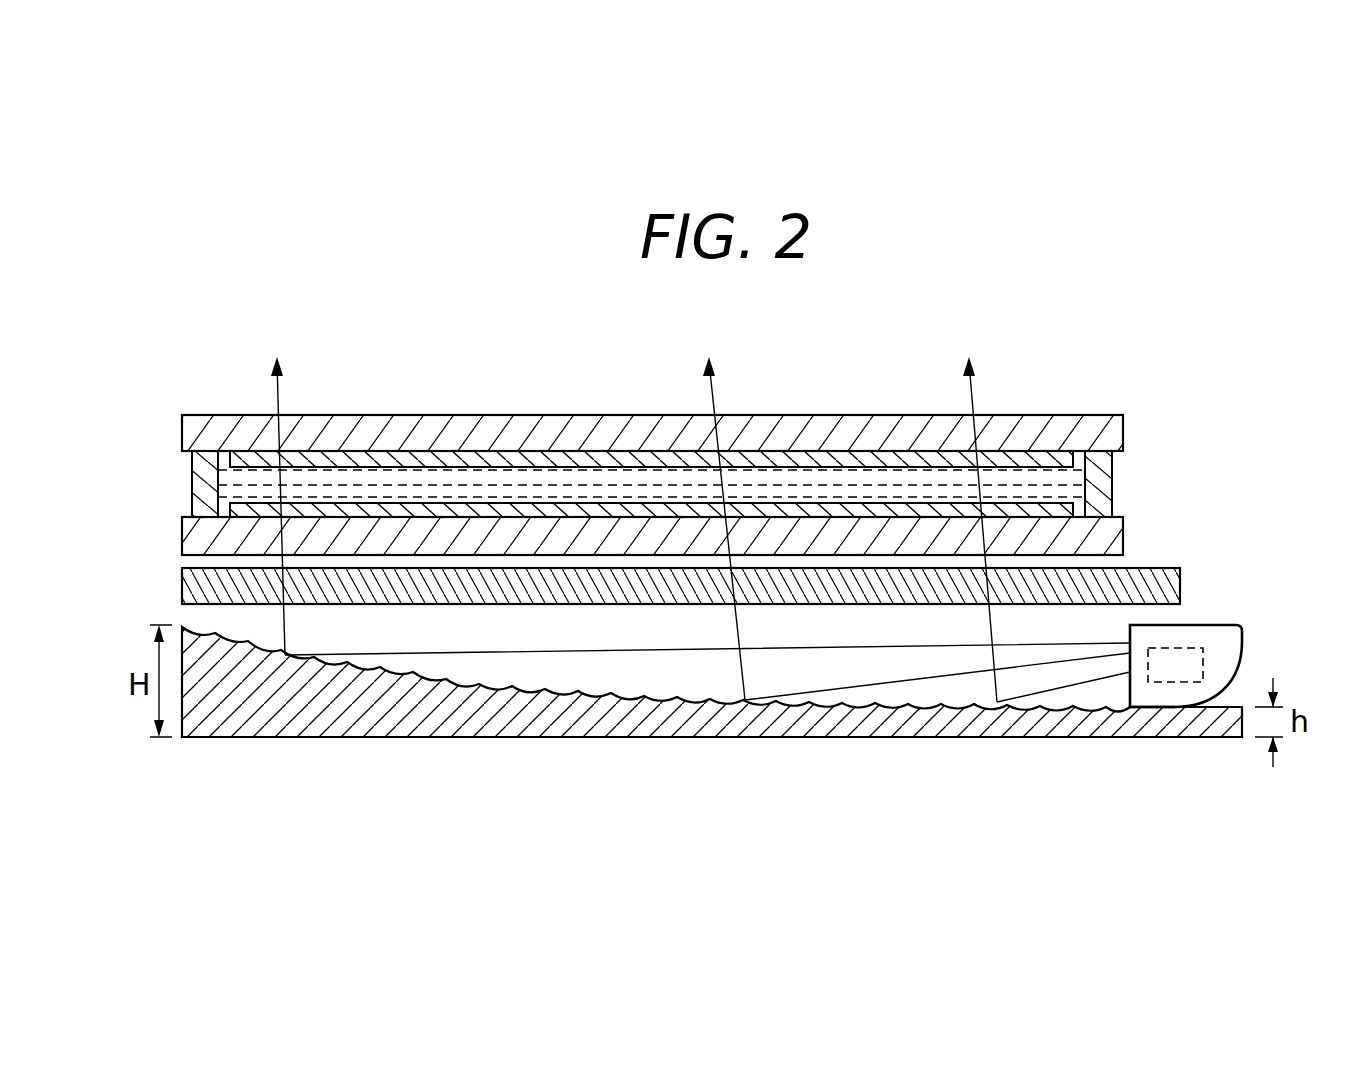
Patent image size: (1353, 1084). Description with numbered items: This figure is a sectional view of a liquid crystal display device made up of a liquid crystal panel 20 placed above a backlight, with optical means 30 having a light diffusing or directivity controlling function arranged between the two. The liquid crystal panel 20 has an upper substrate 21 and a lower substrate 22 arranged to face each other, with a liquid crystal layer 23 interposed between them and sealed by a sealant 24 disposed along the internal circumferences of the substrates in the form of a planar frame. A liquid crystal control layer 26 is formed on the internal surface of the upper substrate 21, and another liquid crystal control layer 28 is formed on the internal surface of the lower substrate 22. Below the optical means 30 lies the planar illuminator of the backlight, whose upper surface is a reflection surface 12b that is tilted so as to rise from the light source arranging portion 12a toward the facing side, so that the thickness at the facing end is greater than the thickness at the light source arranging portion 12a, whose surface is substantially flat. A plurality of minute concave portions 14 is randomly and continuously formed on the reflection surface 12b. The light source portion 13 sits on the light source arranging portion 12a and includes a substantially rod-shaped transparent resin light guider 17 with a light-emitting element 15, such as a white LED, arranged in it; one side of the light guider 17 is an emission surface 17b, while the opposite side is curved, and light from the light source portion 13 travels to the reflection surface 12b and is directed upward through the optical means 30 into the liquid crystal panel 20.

The liquid crystal panel 20 is at (700, 429).
The upper substrate 21 is at (1110, 433).
The lower substrate 22 is at (1105, 537).
The liquid crystal layer 23 is at (1068, 480).
The sealant 24 is at (207, 467).
The liquid crystal control layer 26 is at (655, 460).
The liquid crystal control layer 28 is at (775, 510).
The optical means 30 is at (1160, 586).
The light source arranging portion 12a is at (1223, 705).
The reflection surface 12b is at (233, 629).
The light source portion 13 is at (1178, 668).
The minute concave portions 14 is at (458, 683).
The light-emitting element 15 is at (1165, 672).
The light guider 17 is at (1230, 632).
The emission surface 17b is at (1127, 688).